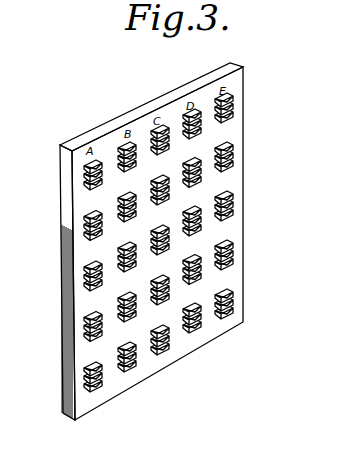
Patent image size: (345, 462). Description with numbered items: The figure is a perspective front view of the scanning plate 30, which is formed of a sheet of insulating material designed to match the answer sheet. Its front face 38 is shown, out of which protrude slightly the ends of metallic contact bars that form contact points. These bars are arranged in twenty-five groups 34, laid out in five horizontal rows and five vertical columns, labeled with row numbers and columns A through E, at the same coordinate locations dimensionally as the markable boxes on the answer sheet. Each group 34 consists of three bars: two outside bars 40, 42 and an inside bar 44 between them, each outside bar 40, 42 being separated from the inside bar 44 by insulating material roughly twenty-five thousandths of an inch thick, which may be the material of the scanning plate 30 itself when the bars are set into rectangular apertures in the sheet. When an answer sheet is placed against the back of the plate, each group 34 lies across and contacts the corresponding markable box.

The scanning plate 30 is at (173, 243).
The group of contact bars 34 is at (97, 163).
The front face 38 is at (238, 268).
The outside bar 40 is at (88, 168).
The outside bar 42 is at (87, 186).
The inside bar 44 is at (88, 178).